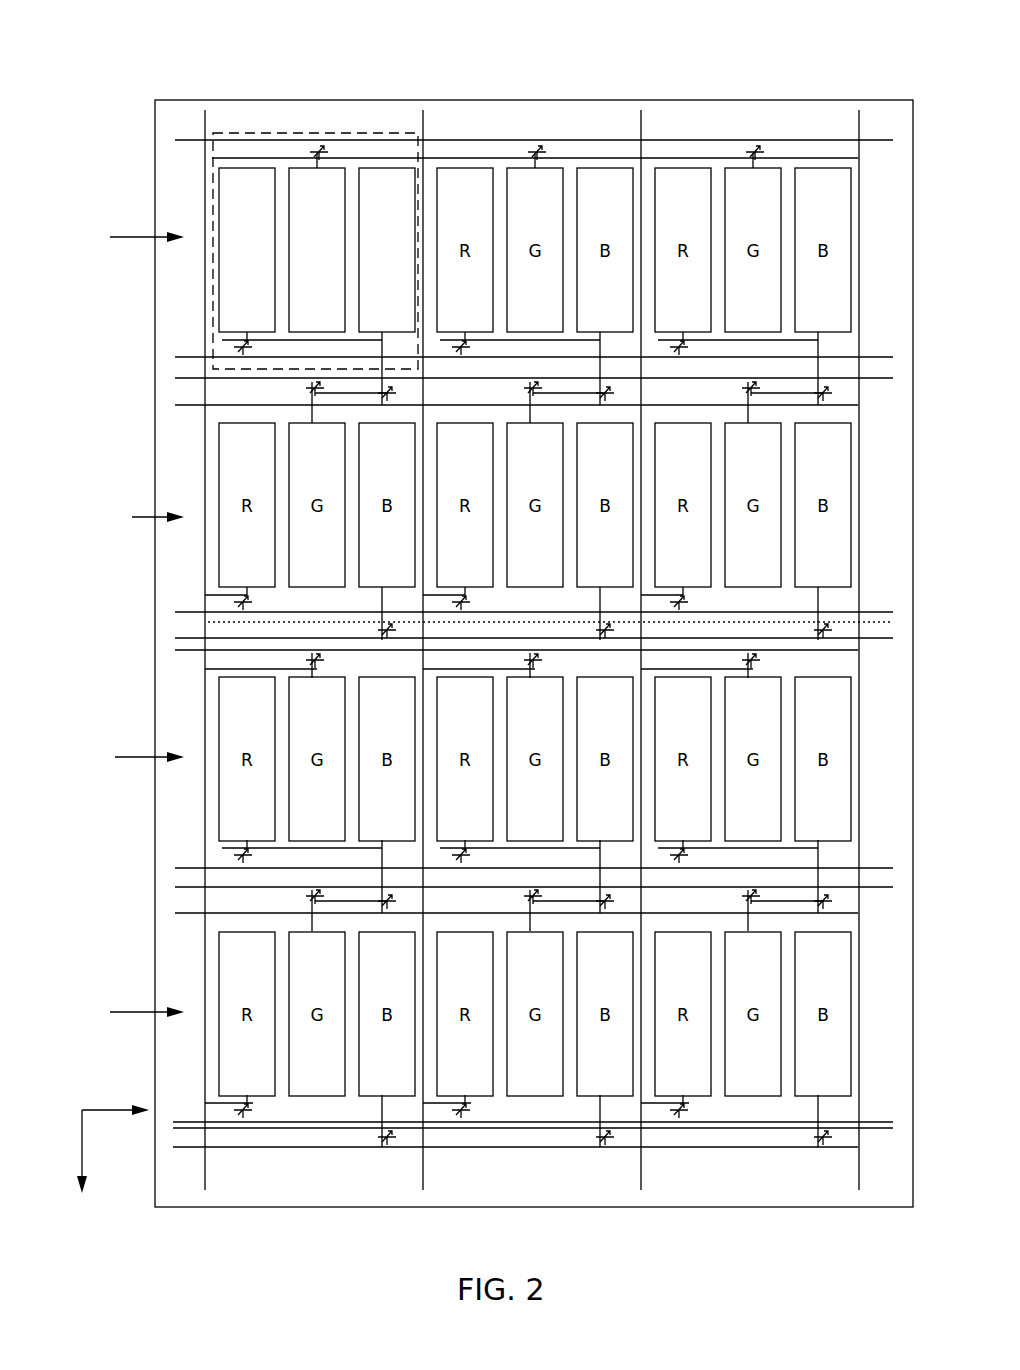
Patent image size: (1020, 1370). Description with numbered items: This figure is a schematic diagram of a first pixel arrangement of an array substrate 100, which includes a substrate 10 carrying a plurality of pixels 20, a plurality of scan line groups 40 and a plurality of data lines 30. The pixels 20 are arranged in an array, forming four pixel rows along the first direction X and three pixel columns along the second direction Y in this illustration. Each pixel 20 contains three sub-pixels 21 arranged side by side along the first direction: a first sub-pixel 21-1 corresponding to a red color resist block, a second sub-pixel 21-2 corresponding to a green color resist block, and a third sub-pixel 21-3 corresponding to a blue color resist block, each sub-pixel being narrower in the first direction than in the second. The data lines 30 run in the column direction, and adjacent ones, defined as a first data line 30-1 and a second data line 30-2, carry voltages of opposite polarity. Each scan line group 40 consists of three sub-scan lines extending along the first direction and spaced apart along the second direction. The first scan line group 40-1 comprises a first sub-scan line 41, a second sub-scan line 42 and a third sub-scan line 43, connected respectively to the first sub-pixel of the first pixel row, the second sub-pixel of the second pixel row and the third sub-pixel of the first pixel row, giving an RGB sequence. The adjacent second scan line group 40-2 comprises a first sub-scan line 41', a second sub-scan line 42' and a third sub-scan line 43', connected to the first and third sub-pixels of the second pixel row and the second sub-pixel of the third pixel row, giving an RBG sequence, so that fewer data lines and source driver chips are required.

The array substrate 100 is at (172, 58).
The substrate 10 is at (868, 100).
The pixel 20 is at (407, 135).
The sub-pixel 21 is at (355, 52).
The first sub-pixel 21-1 is at (247, 177).
The second sub-pixel 21-2 is at (305, 175).
The third sub-pixel 21-3 is at (380, 175).
The data line 30 is at (641, 128).
The first data line 30-1 is at (205, 1175).
The second data line 30-2 is at (423, 1175).
The scan line group 40 is at (75, 393).
The first scan line group 40-1 is at (100, 328).
The second scan line group 40-2 is at (100, 577).
The first sub-scan line 41 is at (497, 341).
The second sub-scan line 42 is at (497, 371).
The third sub-scan line 43 is at (480, 421).
The first sub-scan line 41' is at (497, 591).
The second sub-scan line 42' is at (497, 625).
The third sub-scan line 43' is at (480, 666).